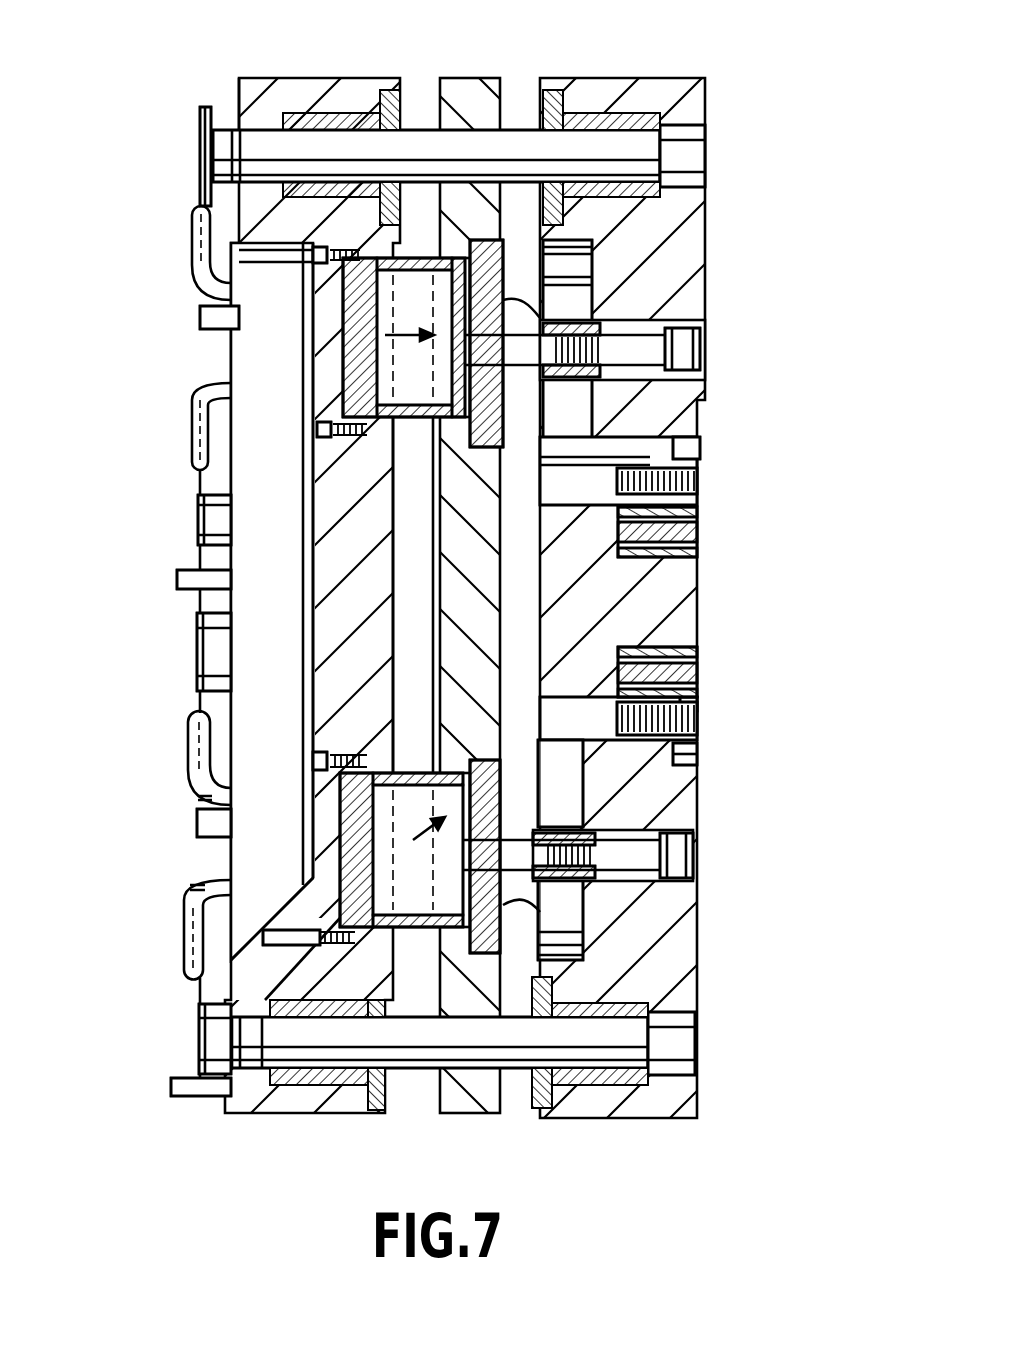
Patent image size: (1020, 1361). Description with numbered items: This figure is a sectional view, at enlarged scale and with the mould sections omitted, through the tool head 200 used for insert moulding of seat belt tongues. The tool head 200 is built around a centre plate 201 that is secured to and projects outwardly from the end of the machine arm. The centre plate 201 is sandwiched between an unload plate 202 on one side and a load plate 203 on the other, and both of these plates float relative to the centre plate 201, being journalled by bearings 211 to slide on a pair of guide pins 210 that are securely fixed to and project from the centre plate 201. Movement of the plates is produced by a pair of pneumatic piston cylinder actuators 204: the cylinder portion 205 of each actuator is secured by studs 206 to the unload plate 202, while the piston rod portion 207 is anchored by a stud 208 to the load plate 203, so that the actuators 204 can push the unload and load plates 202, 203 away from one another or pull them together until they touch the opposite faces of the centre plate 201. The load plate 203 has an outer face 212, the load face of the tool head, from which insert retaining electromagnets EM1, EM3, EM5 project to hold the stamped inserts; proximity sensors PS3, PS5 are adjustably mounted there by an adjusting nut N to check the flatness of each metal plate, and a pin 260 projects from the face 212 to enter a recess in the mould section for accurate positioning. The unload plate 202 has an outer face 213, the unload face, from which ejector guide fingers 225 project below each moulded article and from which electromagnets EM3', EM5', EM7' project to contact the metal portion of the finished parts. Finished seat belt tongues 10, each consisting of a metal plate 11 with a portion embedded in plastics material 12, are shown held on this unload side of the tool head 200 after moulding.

The tool head 200 is at (745, 95).
The centre plate 201 is at (450, 78).
The unload plate 202 is at (283, 78).
The load plate 203 is at (675, 78).
The pneumatic piston cylinder actuator 204 is at (410, 335).
The cylinder portion 205 is at (350, 380).
The stud 206 is at (320, 430).
The piston rod portion 207 is at (545, 315).
The stud 208 is at (690, 350).
The guide pin 210 is at (522, 145).
The bearing 211 is at (590, 110).
The outer face of the load plate 212 is at (700, 190).
The outer face of the unload plate 213 is at (239, 95).
The ejector guide finger 225 is at (200, 318).
The pin 260 is at (697, 754).
The adjusting nut N is at (700, 450).
The proximity sensor PS3 is at (700, 482).
The proximity sensor PS5 is at (700, 720).
The insert retaining electromagnet EM1 is at (205, 150).
The insert retaining electromagnet EM3 is at (730, 524).
The insert retaining electromagnet EM5 is at (730, 649).
The electromagnet EM3' is at (147, 529).
The electromagnet EM5' is at (147, 652).
The electromagnet EM7' is at (145, 1040).
The seat belt tongue 10 is at (190, 192).
The metal plate 11 is at (198, 685).
The plastics material 12 is at (210, 798).